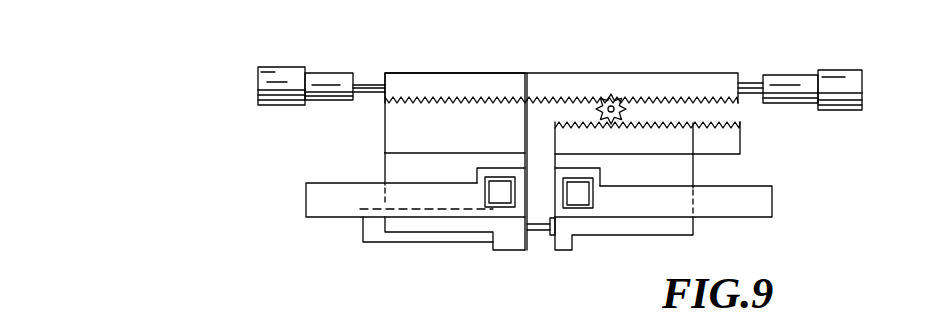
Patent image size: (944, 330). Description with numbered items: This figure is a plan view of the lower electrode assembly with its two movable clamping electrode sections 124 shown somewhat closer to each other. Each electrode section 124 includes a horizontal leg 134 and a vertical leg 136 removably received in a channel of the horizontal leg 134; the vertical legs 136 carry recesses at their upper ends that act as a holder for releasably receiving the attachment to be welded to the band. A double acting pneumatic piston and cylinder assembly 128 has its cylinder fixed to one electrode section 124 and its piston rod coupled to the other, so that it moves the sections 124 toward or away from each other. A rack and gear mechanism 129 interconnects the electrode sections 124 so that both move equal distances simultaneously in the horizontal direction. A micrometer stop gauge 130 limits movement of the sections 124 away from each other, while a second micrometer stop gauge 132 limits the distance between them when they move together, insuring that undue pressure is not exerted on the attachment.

The clamping electrode section 124 is at (306, 201).
The double acting pneumatic piston and cylinder assembly 128 is at (372, 238).
The rack and gear mechanism 129 is at (657, 100).
The micrometer stop gauge 130 is at (293, 72).
The micrometer stop gauge 132 is at (830, 72).
The horizontal leg 134 is at (326, 183).
The vertical leg 136 is at (497, 197).